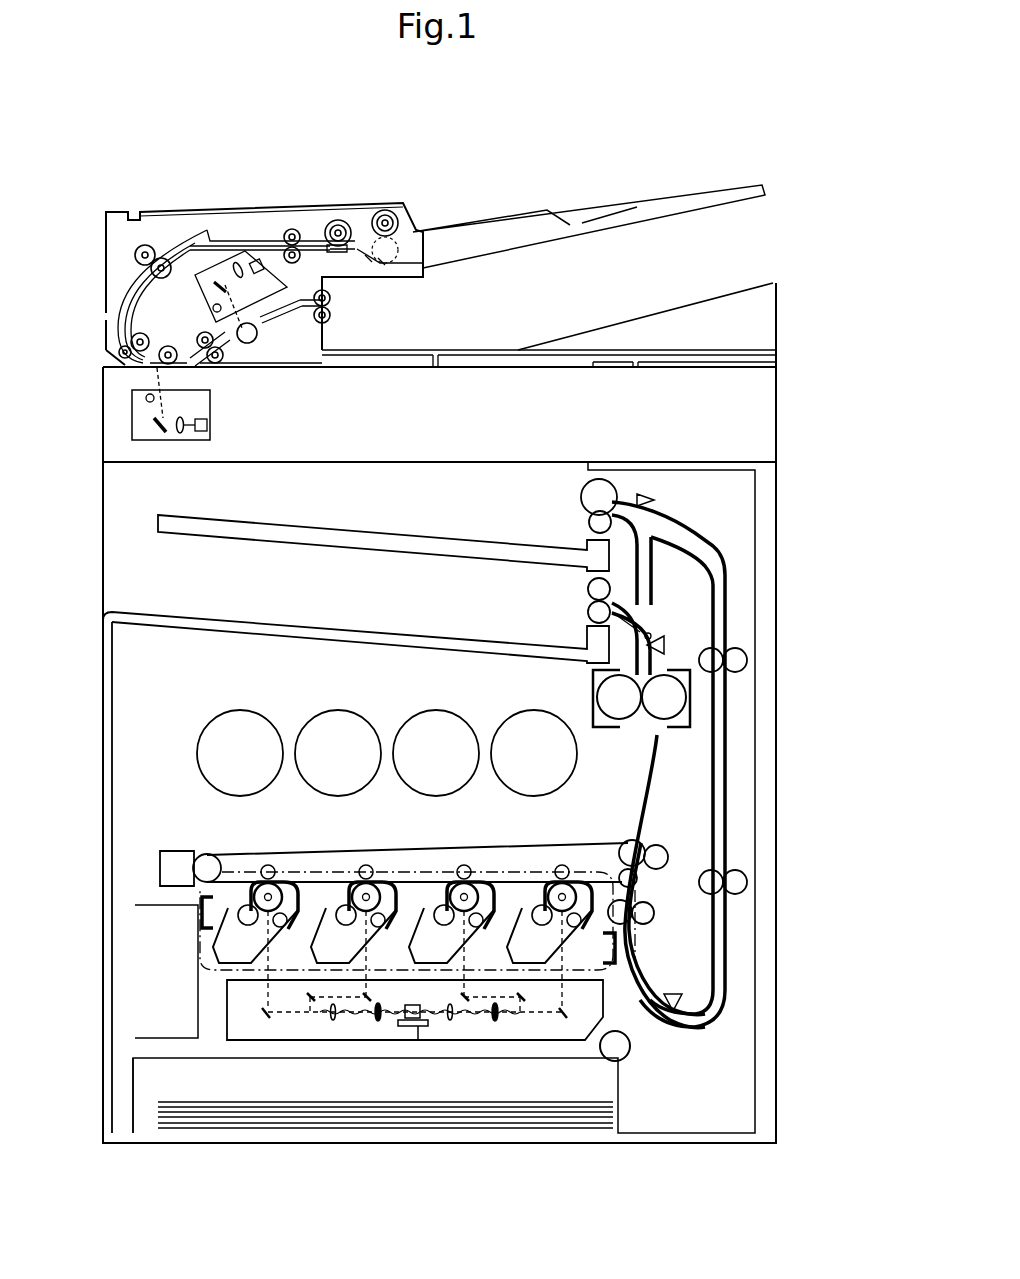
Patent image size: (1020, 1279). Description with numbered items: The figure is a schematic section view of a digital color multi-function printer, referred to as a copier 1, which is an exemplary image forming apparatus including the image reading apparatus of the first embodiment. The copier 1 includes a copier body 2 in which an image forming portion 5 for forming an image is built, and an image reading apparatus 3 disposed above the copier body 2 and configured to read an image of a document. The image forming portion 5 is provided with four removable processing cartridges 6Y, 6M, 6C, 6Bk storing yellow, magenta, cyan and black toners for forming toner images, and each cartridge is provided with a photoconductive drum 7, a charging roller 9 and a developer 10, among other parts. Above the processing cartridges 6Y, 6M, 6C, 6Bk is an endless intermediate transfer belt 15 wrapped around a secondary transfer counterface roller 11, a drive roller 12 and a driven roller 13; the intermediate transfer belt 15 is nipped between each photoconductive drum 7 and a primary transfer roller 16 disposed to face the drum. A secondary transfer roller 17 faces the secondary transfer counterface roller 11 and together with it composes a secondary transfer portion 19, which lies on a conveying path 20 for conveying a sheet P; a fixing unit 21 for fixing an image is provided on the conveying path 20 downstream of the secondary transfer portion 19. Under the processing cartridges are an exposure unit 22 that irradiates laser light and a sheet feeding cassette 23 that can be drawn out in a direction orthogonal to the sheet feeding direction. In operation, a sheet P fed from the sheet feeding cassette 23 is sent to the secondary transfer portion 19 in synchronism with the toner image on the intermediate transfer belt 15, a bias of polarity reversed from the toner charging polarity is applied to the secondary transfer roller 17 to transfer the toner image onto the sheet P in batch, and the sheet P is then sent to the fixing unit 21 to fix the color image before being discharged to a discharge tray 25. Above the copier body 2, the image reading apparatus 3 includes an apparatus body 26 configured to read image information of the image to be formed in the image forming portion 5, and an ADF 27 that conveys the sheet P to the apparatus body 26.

The copier 1 is at (192, 170).
The copier body 2 is at (88, 758).
The image reading apparatus 3 is at (526, 158).
The image forming portion 5 is at (172, 795).
The processing cartridge 6Y is at (293, 885).
The processing cartridge 6M is at (391, 885).
The processing cartridge 6C is at (489, 885).
The processing cartridge 6Bk is at (587, 885).
The photoconductive drum 7 is at (256, 883).
The charging roller 9 is at (279, 928).
The developer 10 is at (243, 914).
The secondary transfer counterface roller 11 is at (630, 838).
The drive roller 12 is at (640, 872).
The driven roller 13 is at (201, 860).
The intermediate transfer belt 15 is at (385, 848).
The primary transfer roller 16 is at (269, 865).
The secondary transfer roller 17 is at (661, 848).
The secondary transfer portion 19 is at (642, 815).
The conveying path 20 is at (665, 745).
The fixing unit 21 is at (606, 697).
The exposure unit 22 is at (598, 1017).
The sheet feeding cassette 23 is at (130, 1130).
The discharge tray 25 is at (363, 628).
The body of the image reading apparatus 26 is at (800, 402).
The ADF 27 is at (104, 190).
The sheet P is at (381, 1133).